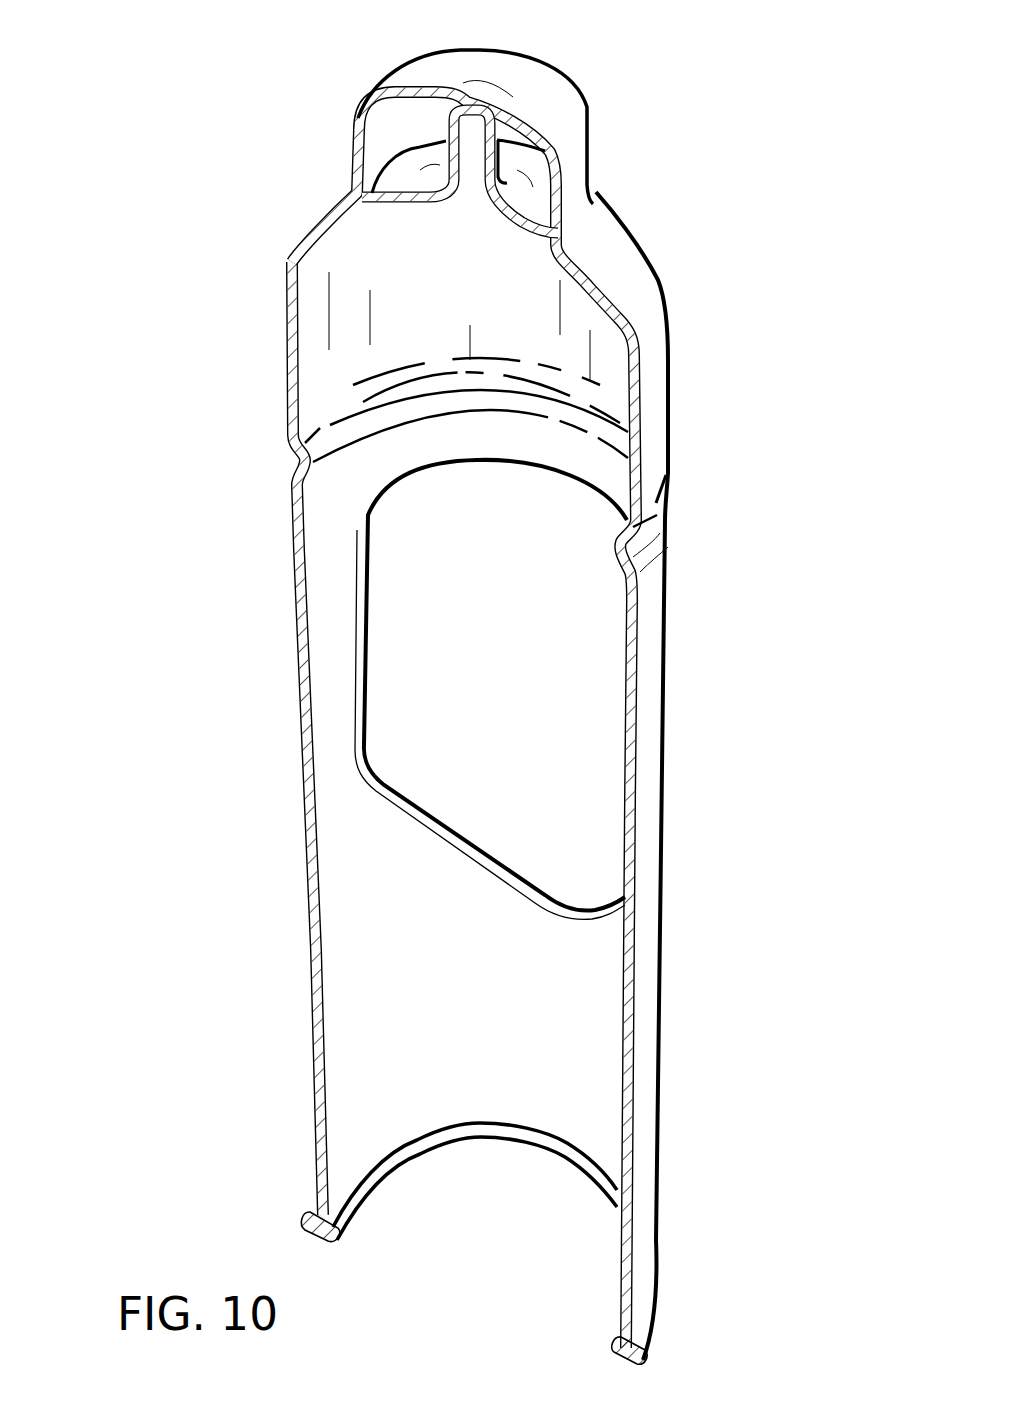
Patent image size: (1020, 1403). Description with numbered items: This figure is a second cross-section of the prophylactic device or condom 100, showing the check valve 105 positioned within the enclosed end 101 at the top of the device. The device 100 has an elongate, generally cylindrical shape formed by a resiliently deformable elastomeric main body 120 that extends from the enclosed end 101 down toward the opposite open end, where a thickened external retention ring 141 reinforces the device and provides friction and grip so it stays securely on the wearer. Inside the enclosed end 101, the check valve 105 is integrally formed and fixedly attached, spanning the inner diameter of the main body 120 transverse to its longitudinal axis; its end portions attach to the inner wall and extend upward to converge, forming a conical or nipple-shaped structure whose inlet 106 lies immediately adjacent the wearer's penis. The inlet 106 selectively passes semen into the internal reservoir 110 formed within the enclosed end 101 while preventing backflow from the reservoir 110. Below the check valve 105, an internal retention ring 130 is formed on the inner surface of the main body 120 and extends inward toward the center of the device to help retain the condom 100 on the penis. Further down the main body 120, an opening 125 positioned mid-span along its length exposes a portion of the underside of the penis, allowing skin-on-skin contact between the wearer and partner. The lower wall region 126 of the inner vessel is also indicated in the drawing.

The prophylactic device/condom 100 is at (439, 684).
The enclosed end 101 is at (500, 83).
The check valve 105 is at (513, 218).
The inlet 106 is at (470, 128).
The internal reservoir 110 is at (390, 147).
The main body 120 is at (643, 868).
The opening 125 is at (460, 657).
The inner vessel lower wall 126 is at (547, 913).
The internal retention ring 130 is at (360, 412).
The external retention ring 141 is at (647, 1343).